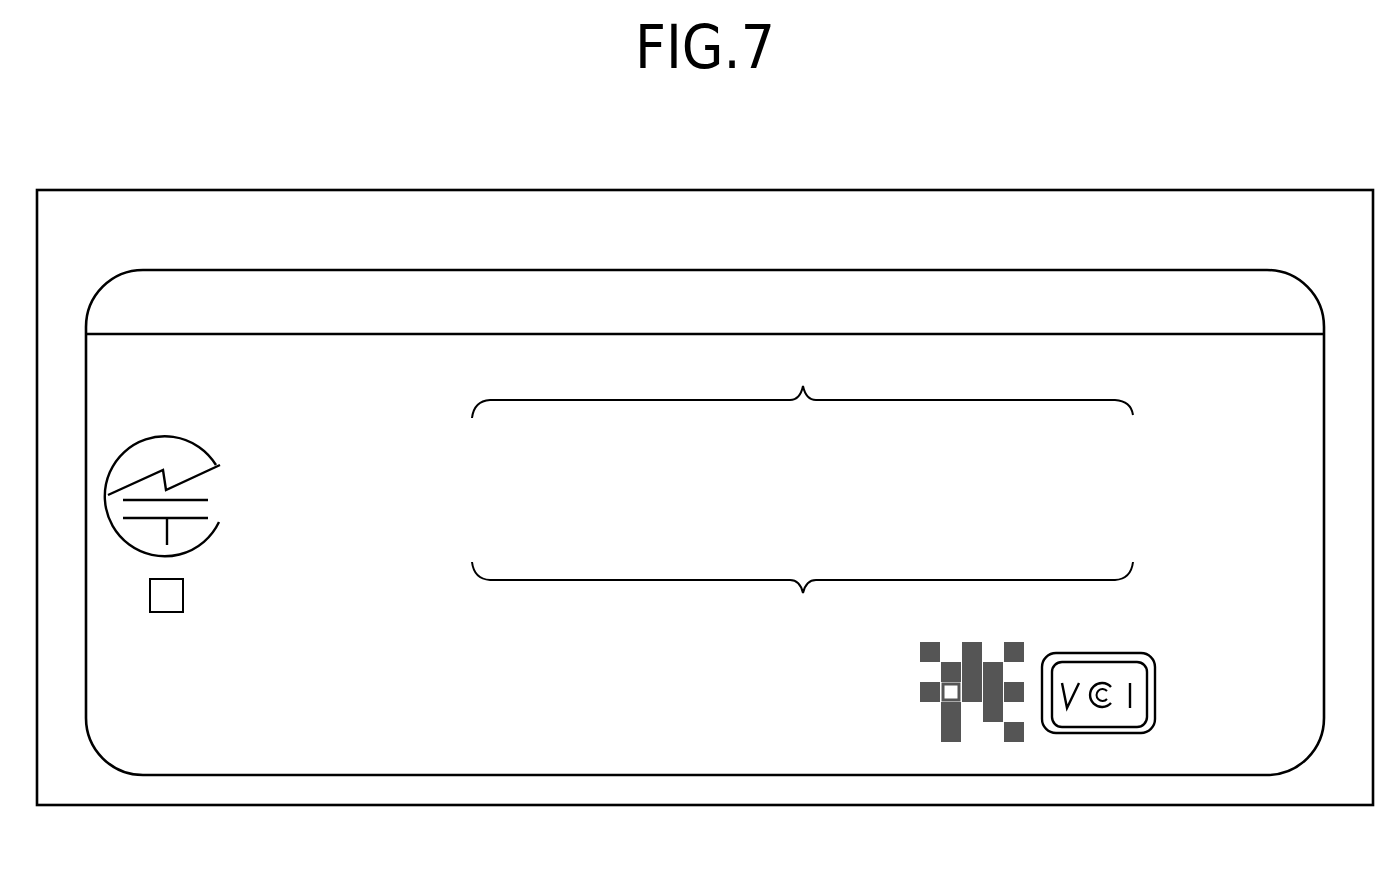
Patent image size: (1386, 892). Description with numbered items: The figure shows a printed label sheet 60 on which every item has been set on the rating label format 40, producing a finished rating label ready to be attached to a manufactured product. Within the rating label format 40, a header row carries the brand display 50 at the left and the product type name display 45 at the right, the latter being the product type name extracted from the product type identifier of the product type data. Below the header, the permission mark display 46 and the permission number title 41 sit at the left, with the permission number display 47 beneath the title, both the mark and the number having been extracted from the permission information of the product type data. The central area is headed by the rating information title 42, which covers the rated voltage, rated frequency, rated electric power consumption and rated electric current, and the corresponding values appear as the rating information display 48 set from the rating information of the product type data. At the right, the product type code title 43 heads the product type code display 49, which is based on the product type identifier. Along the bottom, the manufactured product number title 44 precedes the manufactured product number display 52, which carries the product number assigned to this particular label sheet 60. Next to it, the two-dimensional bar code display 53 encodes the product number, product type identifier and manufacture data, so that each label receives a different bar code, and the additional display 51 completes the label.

The rating label format 40 is at (875, 268).
The permission number title 41 is at (327, 435).
The rating information title 42 is at (801, 424).
The product type code title 43 is at (1203, 433).
The manufactured product number title 44 is at (360, 712).
The product type name display 45 is at (1147, 302).
The permission mark display 46 is at (110, 547).
The permission number display 47 is at (345, 568).
The rating information display 48 is at (802, 582).
The product type code display 49 is at (1237, 553).
The brand display 50 is at (262, 305).
The additional display 51 is at (1163, 697).
The manufactured product number display 52 is at (762, 692).
The two-dimensional bar code display 53 is at (990, 643).
The label sheet 60 is at (1117, 188).